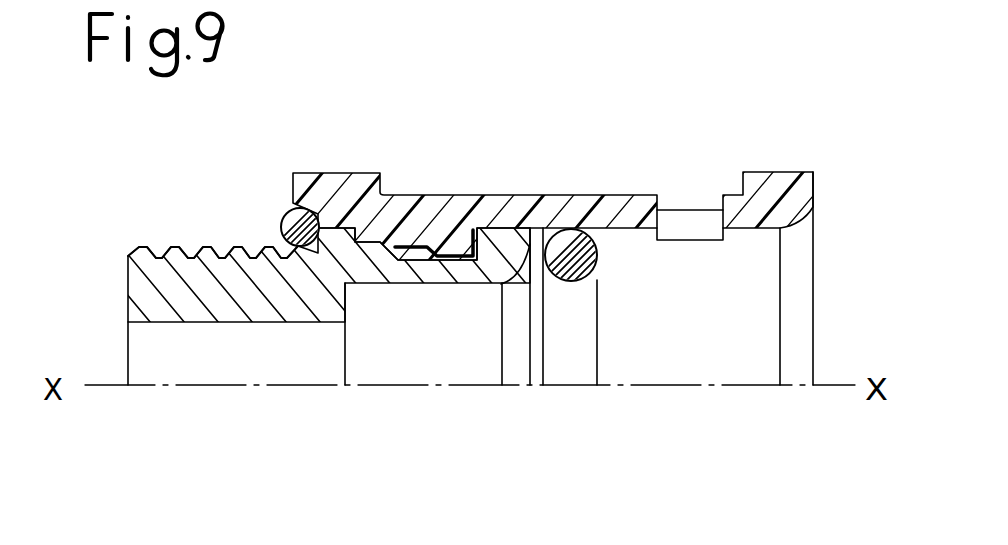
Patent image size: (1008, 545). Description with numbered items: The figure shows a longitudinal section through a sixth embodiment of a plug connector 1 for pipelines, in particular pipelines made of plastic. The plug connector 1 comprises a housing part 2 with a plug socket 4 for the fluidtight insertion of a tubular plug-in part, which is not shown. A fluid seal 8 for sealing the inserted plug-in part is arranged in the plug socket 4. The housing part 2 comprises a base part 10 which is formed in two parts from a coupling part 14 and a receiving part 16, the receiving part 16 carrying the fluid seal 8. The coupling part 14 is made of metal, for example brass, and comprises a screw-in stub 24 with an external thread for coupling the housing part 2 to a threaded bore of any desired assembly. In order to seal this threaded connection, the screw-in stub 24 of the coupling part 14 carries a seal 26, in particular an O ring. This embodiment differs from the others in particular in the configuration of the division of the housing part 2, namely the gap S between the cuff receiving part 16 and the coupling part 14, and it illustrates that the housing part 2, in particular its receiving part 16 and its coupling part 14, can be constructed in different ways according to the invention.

The plug connector 1 is at (118, 195).
The housing part 2 is at (582, 171).
The plug socket 4 is at (520, 333).
The fluid seal 8 is at (596, 258).
The base part 10 is at (678, 141).
The coupling part 14 is at (265, 320).
The receiving part 16 is at (473, 208).
The screw-in stub 24 is at (143, 292).
The seal 26 is at (290, 214).
The gap S is at (345, 208).